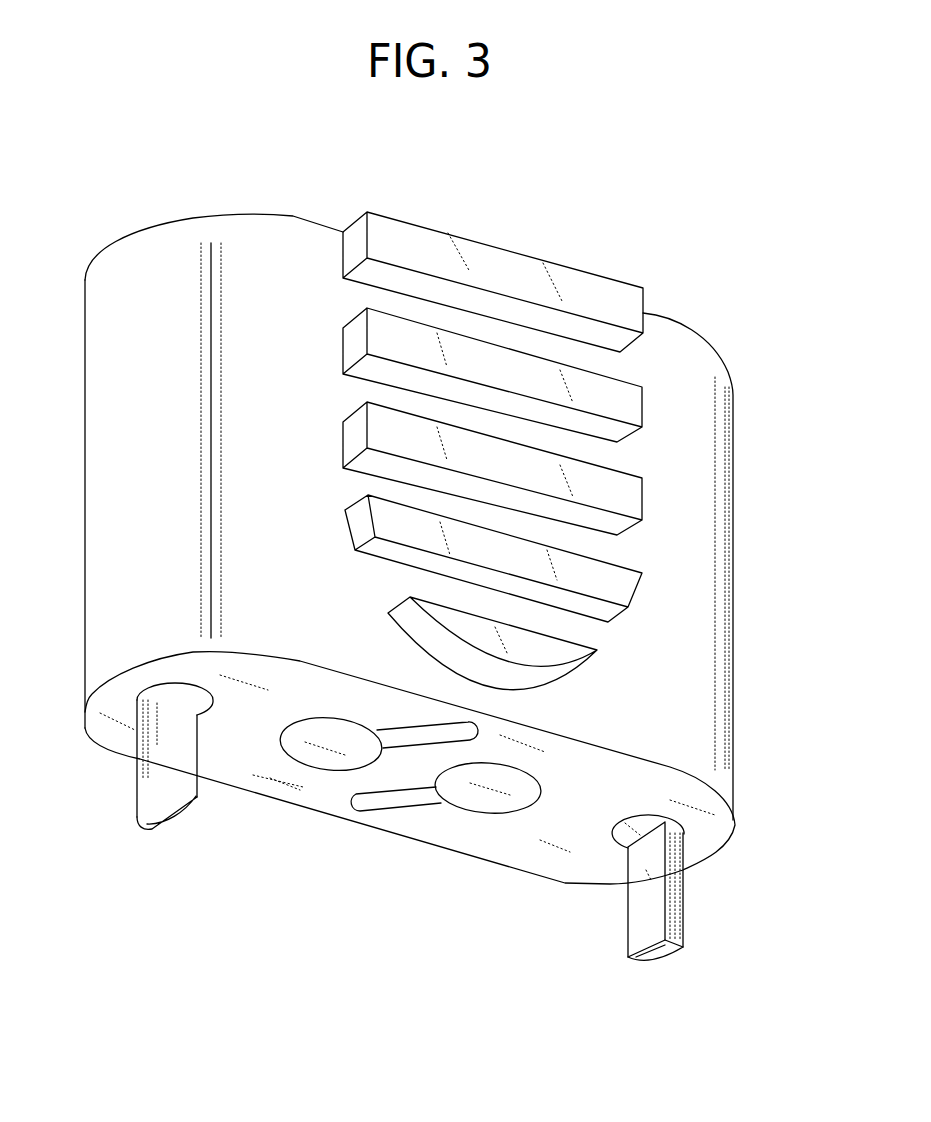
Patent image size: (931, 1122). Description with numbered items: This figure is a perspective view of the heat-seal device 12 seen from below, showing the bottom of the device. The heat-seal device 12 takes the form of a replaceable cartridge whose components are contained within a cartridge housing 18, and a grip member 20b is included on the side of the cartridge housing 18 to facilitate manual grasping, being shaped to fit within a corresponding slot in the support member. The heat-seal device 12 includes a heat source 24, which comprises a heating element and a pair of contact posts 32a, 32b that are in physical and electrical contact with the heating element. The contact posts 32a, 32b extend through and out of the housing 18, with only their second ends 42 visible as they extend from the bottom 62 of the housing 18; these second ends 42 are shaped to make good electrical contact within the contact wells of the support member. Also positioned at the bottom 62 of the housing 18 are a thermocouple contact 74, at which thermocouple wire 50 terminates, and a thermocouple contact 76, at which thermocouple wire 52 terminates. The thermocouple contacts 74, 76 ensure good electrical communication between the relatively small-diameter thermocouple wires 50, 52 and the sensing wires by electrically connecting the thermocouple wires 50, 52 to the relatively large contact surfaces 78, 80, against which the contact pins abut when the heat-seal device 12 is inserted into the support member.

The heat-seal device 12 is at (178, 187).
The cartridge housing 18 is at (733, 515).
The grip member 20b is at (592, 292).
The heat source 24 is at (687, 927).
The contact post 32a is at (683, 890).
The contact post 32b is at (153, 767).
The second ends of the contact posts 42 is at (197, 787).
The thermocouple wire 50 is at (360, 810).
The thermocouple wire 52 is at (483, 720).
The bottom of the housing 62 is at (508, 843).
The thermocouple contact 74 is at (467, 795).
The thermocouple contact 76 is at (353, 738).
The contact surface 78 is at (525, 793).
The contact surface 80 is at (303, 747).